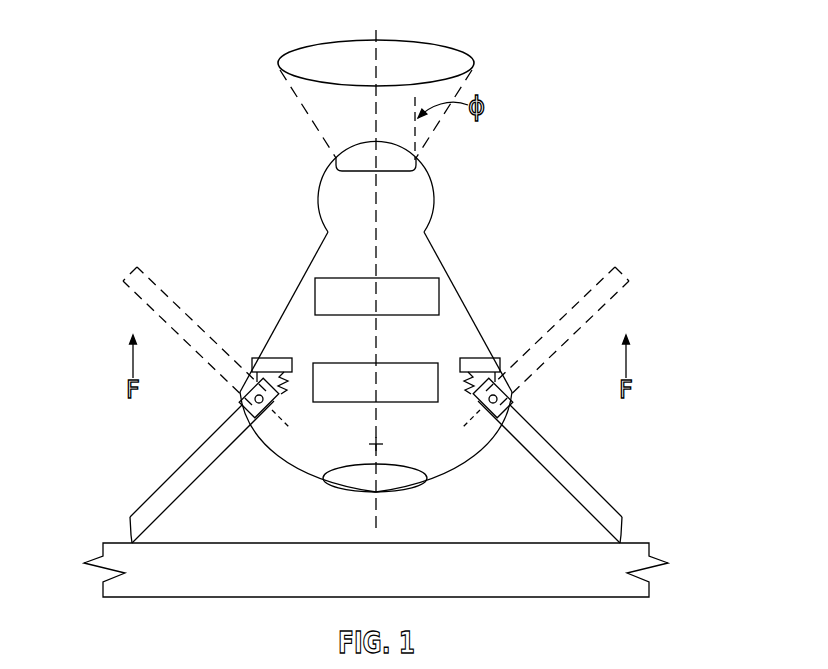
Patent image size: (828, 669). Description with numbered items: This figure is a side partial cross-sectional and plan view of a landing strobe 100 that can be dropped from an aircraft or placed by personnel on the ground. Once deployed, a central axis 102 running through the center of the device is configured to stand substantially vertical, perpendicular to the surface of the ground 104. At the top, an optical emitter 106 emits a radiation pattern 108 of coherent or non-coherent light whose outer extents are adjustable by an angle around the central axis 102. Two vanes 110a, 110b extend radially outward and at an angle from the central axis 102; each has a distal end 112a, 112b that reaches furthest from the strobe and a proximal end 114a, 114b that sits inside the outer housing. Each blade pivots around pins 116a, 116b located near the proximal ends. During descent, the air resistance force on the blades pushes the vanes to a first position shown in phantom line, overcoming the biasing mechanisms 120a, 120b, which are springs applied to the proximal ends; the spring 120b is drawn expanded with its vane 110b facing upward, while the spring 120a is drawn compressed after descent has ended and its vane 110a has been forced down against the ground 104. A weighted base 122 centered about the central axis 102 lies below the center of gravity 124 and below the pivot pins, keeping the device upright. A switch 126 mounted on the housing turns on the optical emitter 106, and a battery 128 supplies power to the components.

The landing strobe 100 is at (613, 25).
The central axis 102 is at (378, 52).
The ground 104 is at (440, 586).
The optical emitter 106 is at (340, 166).
The radiation pattern 108 is at (474, 66).
The vane 110a is at (192, 320).
The vane 110b is at (560, 320).
The distal end 112a is at (129, 528).
The distal end 112b is at (624, 528).
The proximal end 114a is at (256, 362).
The proximal end 114b is at (496, 362).
The pin 116a is at (241, 397).
The pin 116b is at (511, 397).
The biasing mechanism 120a is at (285, 380).
The biasing mechanism 120b is at (455, 393).
The weighted base 122 is at (395, 484).
The center of gravity 124 is at (362, 444).
The switch 126 is at (425, 278).
The battery 128 is at (388, 363).